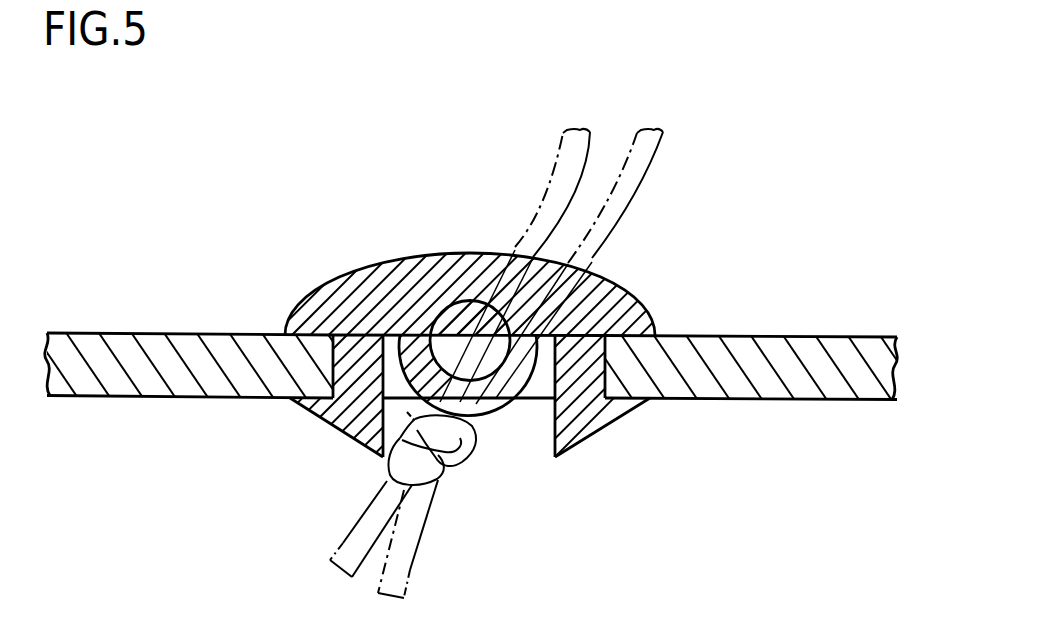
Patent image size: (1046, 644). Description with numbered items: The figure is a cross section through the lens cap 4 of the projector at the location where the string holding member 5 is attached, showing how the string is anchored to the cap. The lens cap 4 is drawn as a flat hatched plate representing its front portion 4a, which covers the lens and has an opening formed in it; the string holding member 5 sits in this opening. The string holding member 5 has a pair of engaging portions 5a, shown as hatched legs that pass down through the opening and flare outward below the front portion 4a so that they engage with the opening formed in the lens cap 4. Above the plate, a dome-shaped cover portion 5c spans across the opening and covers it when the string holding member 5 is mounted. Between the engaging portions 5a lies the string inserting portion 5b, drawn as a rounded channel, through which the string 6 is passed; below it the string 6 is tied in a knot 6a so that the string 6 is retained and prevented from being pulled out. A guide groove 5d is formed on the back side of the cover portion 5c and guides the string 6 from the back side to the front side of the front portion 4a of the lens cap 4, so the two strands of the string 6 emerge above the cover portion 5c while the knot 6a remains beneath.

The lens cap 4 is at (479, 336).
The front portion 4a is at (469, 366).
The string holding member 5 is at (446, 352).
The engaging portions 5a is at (337, 426).
The string inserting portion 5b is at (505, 393).
The cover portion 5c is at (635, 295).
The guide groove 5d is at (460, 304).
The string 6 is at (657, 152).
The knot 6a is at (458, 478).